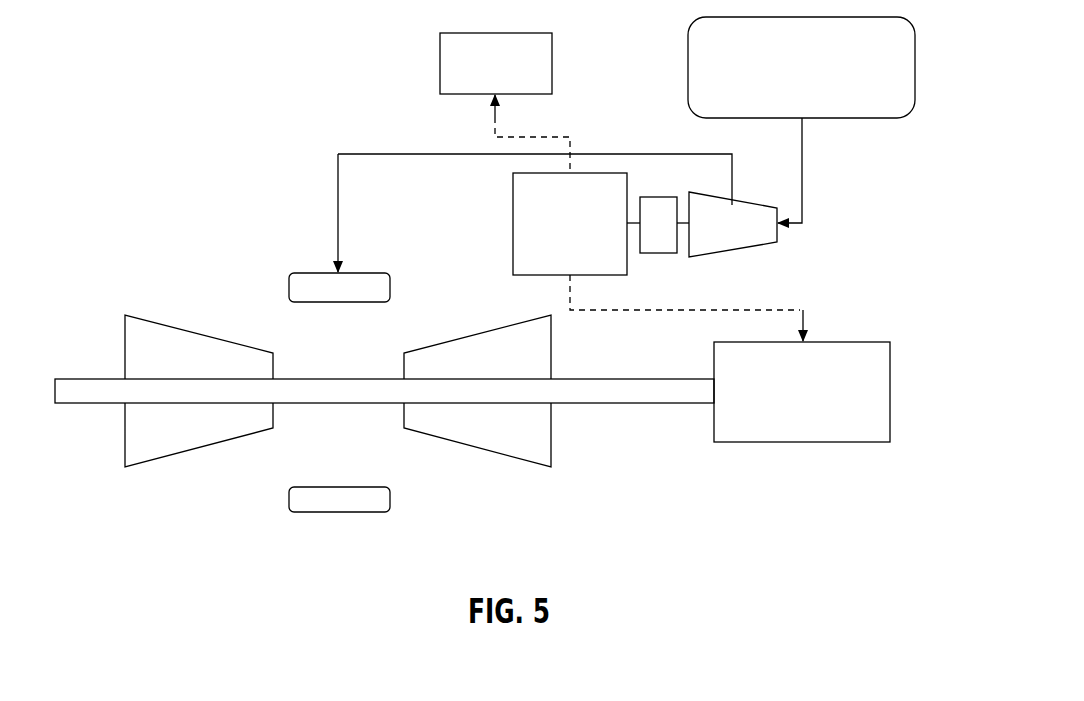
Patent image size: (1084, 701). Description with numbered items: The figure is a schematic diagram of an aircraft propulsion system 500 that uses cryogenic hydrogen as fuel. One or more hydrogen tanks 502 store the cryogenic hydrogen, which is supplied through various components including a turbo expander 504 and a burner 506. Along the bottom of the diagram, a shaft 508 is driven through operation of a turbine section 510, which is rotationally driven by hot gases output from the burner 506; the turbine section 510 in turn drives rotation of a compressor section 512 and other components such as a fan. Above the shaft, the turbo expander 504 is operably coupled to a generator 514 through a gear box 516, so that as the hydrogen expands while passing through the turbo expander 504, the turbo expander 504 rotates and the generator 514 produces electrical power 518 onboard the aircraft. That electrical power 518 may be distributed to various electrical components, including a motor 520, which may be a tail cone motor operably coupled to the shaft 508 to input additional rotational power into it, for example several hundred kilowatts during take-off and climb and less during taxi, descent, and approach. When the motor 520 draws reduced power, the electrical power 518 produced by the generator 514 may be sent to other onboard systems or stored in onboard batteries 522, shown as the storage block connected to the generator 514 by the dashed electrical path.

The aircraft propulsion system 500 is at (158, 43).
The hydrogen tank 502 is at (854, 121).
The turbo expander 504 is at (715, 254).
The burner 506 is at (313, 272).
The shaft 508 is at (648, 404).
The turbine section 510 is at (467, 446).
The compressor section 512 is at (212, 447).
The generator 514 is at (513, 218).
The gear box 516 is at (657, 197).
The electrical power 518 is at (495, 117).
The motor 520 is at (890, 398).
The onboard batteries 522 is at (462, 32).